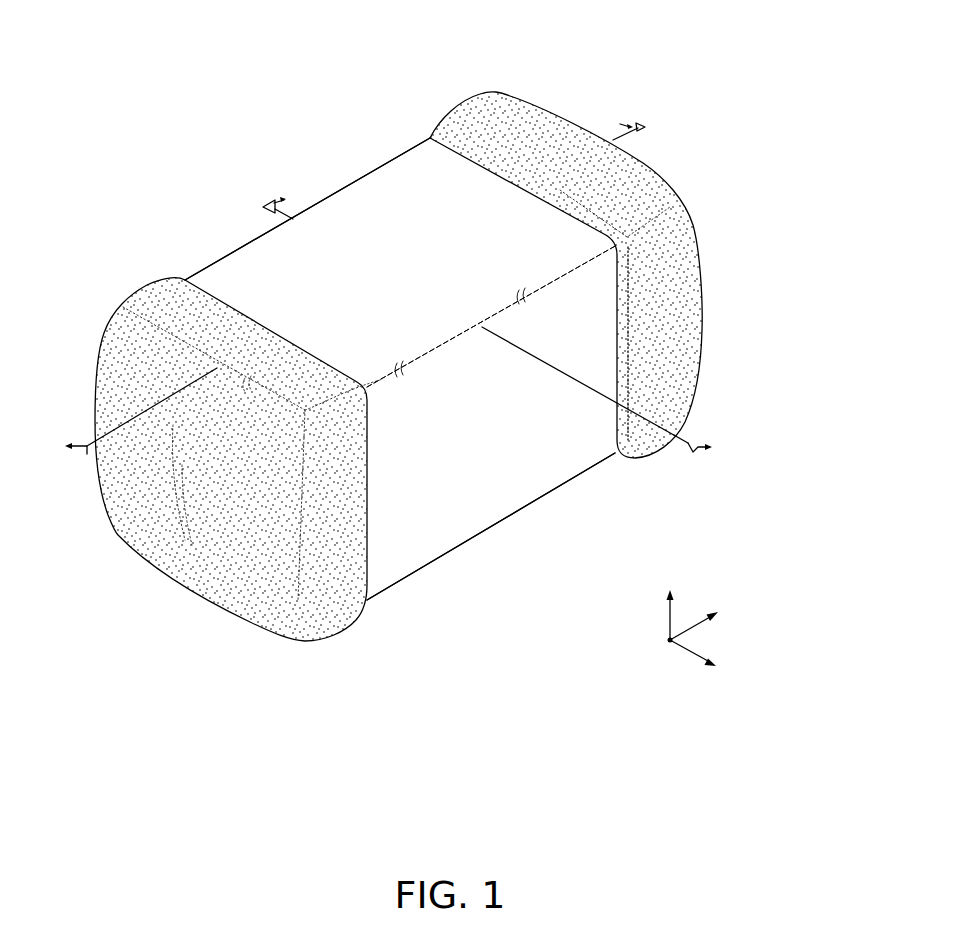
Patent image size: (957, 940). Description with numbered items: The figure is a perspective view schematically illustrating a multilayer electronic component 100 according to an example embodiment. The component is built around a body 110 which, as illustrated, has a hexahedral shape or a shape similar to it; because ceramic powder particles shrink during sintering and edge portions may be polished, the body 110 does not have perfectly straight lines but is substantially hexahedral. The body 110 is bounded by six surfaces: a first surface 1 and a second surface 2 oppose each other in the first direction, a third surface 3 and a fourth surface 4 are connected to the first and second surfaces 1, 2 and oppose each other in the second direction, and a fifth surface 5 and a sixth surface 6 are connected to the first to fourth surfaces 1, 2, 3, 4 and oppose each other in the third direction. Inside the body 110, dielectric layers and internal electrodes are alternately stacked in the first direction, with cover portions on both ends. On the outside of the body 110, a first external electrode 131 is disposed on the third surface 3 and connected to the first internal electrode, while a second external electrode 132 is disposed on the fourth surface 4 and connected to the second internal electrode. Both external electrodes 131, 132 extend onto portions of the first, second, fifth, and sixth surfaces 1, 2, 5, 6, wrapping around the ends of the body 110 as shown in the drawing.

The multilayer electronic component 100 is at (279, 34).
The body 110 is at (401, 356).
The first surface 1 is at (408, 175).
The second surface 2 is at (467, 545).
The third surface 3 is at (143, 520).
The fourth surface 4 is at (545, 116).
The fifth surface 5 is at (234, 246).
The sixth surface 6 is at (542, 472).
The first external electrode 131 is at (235, 432).
The second external electrode 132 is at (566, 242).